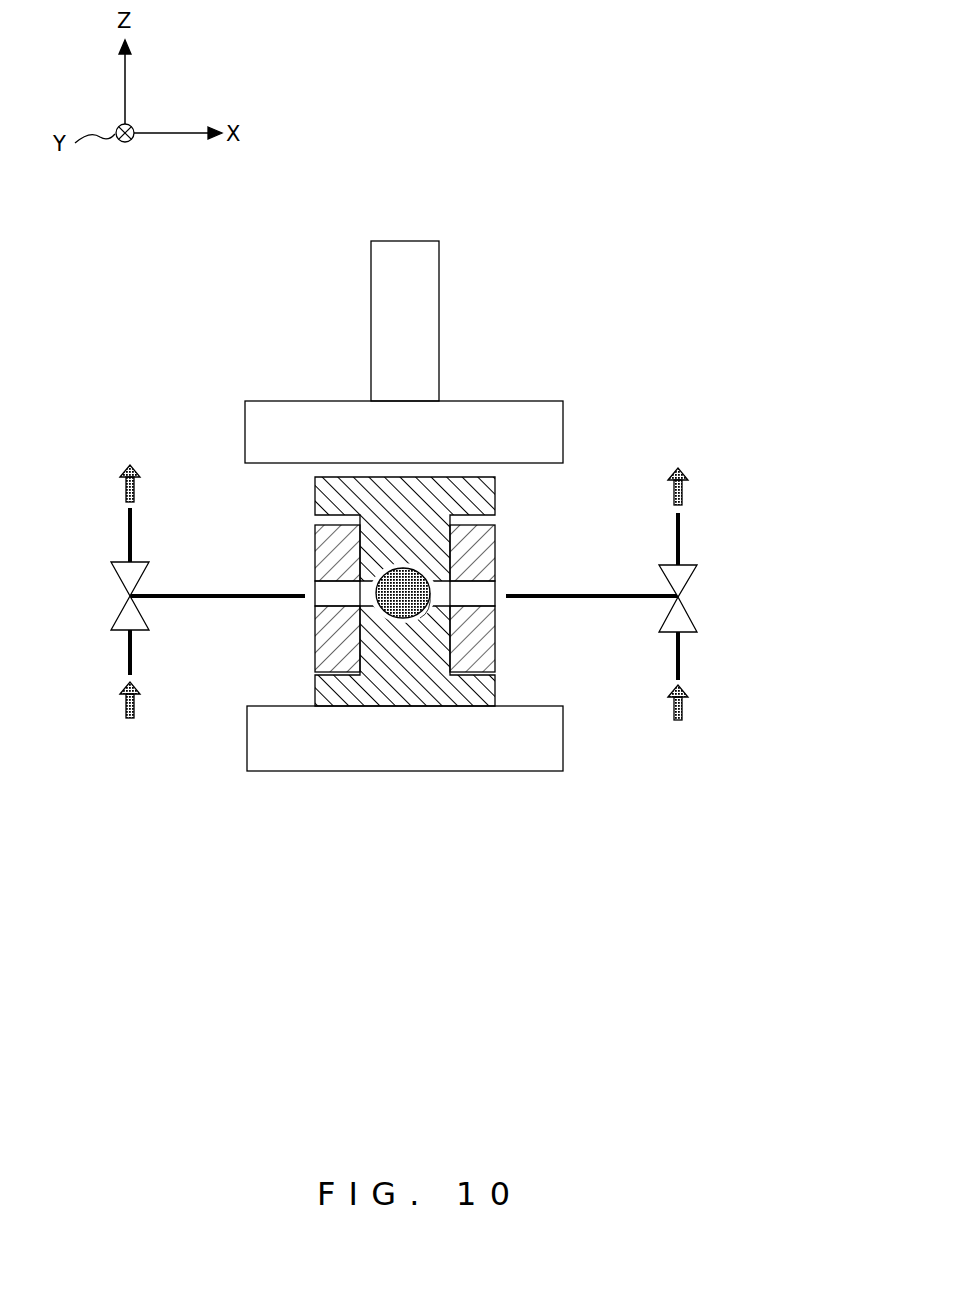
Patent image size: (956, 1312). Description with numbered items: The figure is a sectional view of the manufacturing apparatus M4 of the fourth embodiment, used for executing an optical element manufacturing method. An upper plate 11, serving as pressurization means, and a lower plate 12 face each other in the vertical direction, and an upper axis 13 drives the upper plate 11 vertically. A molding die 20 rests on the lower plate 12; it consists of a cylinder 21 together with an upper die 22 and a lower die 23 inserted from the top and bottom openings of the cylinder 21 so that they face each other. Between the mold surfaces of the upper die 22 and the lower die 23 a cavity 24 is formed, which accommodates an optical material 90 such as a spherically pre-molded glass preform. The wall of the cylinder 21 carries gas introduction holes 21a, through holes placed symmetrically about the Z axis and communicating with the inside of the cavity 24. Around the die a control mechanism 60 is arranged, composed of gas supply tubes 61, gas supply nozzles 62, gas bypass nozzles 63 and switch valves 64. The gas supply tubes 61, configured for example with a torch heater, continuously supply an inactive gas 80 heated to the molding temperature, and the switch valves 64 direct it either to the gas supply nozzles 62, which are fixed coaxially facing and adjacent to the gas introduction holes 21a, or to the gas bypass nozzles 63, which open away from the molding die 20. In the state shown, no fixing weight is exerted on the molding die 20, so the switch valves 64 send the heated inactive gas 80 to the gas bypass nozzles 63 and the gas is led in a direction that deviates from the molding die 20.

The upper plate 11 is at (267, 415).
The lower plate 12 is at (310, 757).
The upper axis 13 is at (428, 260).
The molding die 20 is at (432, 598).
The cylinder 21 is at (335, 538).
The gas introduction holes 21a is at (336, 593).
The upper die 22 is at (367, 498).
The lower die 23 is at (383, 658).
The cavity 24 is at (436, 597).
The control mechanism 60 is at (445, 554).
The gas supply tubes 61 is at (128, 655).
The gas supply nozzles 62 is at (183, 594).
The gas bypass nozzles 63 is at (127, 528).
The switch valves 64 is at (130, 620).
The inactive gas 80 is at (122, 483).
The optical material 90 is at (406, 595).
The manufacturing apparatus M4 is at (698, 134).